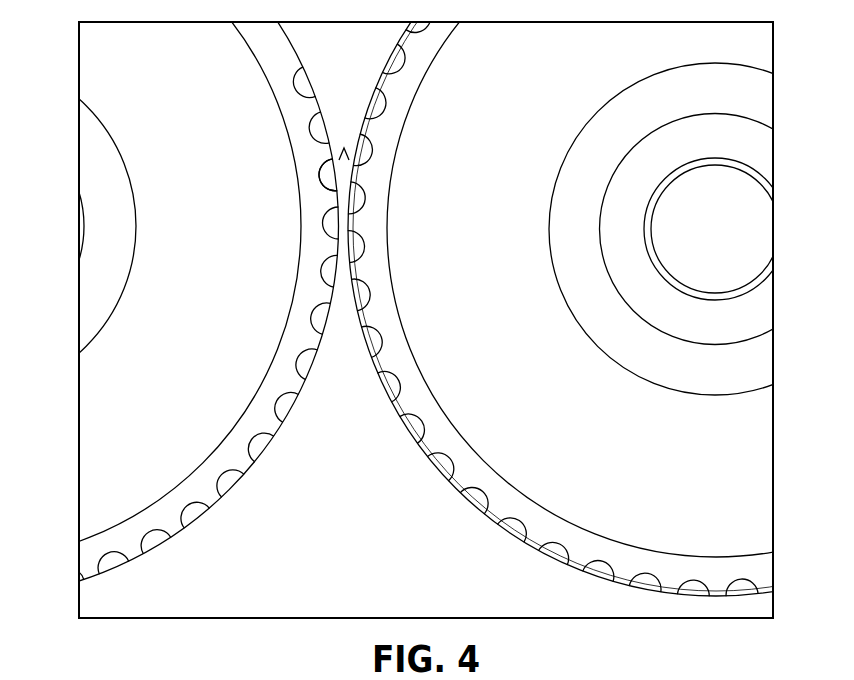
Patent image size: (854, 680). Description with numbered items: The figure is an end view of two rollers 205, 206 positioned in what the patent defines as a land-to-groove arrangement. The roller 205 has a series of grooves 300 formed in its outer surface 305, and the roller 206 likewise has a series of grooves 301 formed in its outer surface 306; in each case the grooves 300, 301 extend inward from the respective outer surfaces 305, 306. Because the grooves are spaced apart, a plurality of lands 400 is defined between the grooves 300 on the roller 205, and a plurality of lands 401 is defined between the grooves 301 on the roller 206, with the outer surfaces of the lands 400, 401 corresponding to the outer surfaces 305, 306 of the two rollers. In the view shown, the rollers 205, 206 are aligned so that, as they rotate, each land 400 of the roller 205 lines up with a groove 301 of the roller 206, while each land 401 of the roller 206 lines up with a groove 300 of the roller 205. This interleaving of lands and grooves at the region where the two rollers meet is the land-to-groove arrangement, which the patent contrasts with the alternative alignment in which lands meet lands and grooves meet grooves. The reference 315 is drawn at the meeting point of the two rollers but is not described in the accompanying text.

The roller 205 is at (108, 481).
The roller 206 is at (732, 482).
The grooves 300 is at (331, 226).
The grooves 301 is at (360, 199).
The outer surface 305 is at (298, 375).
The outer surface 306 is at (395, 400).
The nip 315 is at (344, 150).
The lands 400 is at (354, 247).
The lands 401 is at (347, 175).